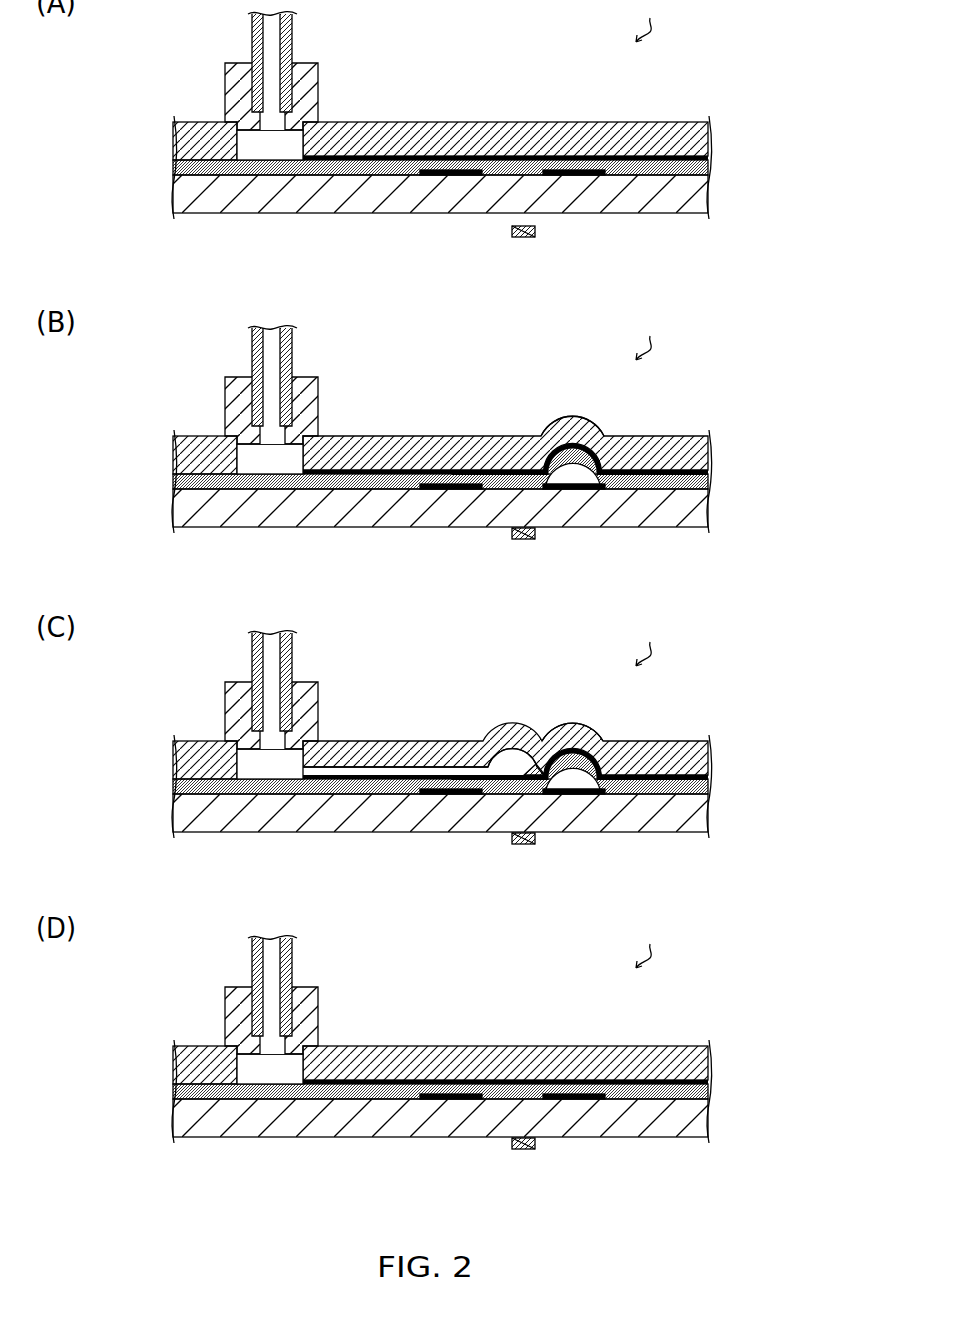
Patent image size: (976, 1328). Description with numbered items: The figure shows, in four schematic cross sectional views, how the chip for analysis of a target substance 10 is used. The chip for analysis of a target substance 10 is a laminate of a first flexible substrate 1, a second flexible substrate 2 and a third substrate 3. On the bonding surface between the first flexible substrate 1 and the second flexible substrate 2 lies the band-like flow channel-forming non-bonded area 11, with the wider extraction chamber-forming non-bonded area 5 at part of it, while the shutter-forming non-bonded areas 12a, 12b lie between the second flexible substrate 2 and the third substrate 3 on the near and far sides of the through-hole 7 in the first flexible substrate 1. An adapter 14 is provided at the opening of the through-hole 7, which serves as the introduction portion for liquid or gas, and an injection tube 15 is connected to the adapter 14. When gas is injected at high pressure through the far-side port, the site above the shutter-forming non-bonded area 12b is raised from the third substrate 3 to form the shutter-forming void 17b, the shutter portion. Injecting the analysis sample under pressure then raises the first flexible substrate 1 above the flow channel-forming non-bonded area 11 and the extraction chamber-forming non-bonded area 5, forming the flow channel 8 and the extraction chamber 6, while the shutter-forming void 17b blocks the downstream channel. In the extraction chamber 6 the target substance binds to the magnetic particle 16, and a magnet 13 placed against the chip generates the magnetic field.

The first flexible substrate 1 is at (419, 603).
The second flexible substrate 2 is at (419, 630).
The third substrate 3 is at (419, 657).
The extraction chamber-forming non-bonded area 5 is at (510, 776).
The extraction chamber 6 is at (497, 757).
The through-hole 7 is at (292, 579).
The flow channel 8 is at (433, 771).
The chip for analysis of a target substance 10 is at (651, 484).
The flow channel-forming non-bonded area 11 is at (377, 580).
The shutter-forming non-bonded area 12a is at (451, 680).
The shutter-forming non-bonded area 12b is at (574, 680).
The magnet 13 is at (522, 720).
The adapter 14 is at (263, 531).
The injection tube 15 is at (299, 524).
The magnetic particle 16 is at (538, 766).
The shutter-forming void 17b is at (581, 584).